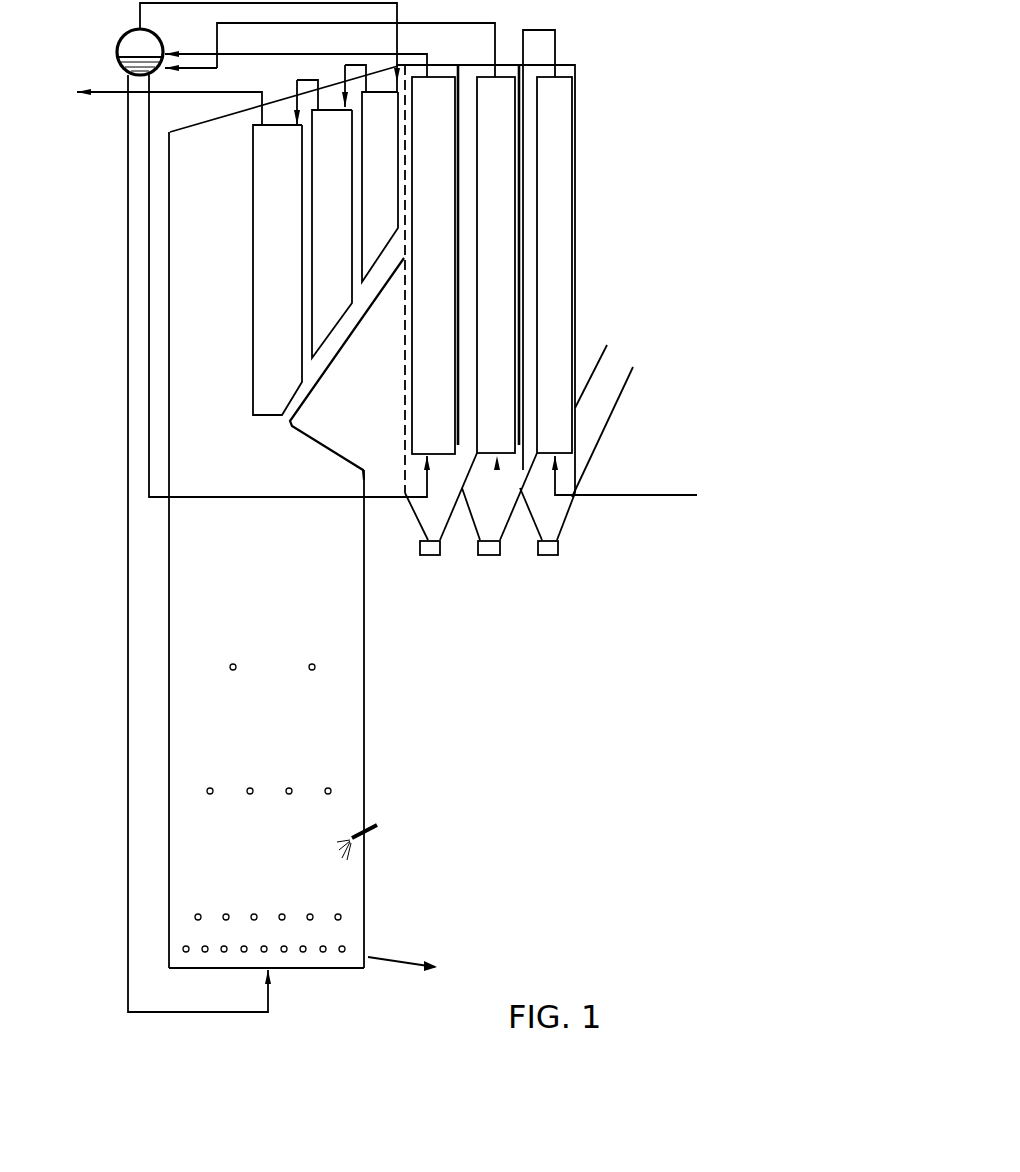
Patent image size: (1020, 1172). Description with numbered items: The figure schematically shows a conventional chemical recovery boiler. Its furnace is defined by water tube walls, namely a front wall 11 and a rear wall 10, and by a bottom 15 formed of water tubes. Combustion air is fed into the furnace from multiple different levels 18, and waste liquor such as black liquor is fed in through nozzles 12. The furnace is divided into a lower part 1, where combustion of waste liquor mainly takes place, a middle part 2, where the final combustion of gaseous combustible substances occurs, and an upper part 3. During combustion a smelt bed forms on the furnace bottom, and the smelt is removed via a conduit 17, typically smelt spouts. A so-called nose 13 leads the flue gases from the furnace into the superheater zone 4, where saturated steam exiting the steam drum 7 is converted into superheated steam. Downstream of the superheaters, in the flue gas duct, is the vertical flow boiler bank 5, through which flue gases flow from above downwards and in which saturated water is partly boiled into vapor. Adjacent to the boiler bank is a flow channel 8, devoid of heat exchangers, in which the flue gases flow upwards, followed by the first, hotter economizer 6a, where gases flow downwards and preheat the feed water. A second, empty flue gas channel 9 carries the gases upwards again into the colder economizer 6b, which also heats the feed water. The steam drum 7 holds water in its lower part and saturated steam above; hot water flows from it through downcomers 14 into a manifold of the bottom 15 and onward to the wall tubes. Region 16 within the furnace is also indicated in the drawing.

The lower part of the furnace 1 is at (246, 886).
The middle part of the furnace 2 is at (250, 749).
The upper part of the furnace 3 is at (250, 479).
The superheater zone 4 is at (325, 240).
The boiler bank 5 is at (313, 315).
The first economizer 6a is at (499, 310).
The second economizer 6b is at (608, 292).
The steam drum 7 is at (117, 50).
The flow channel 8 is at (467, 255).
The second flue gas channel 9 is at (526, 255).
The rear wall 10 is at (367, 620).
The front wall 11 is at (163, 622).
The nozzles 12 is at (377, 827).
The nose 13 is at (313, 437).
The downcomers 14 is at (127, 298).
The bottom 15 is at (332, 970).
The furnace interior 16 is at (338, 693).
The conduit 17 is at (390, 957).
The air levels 18 is at (331, 791).